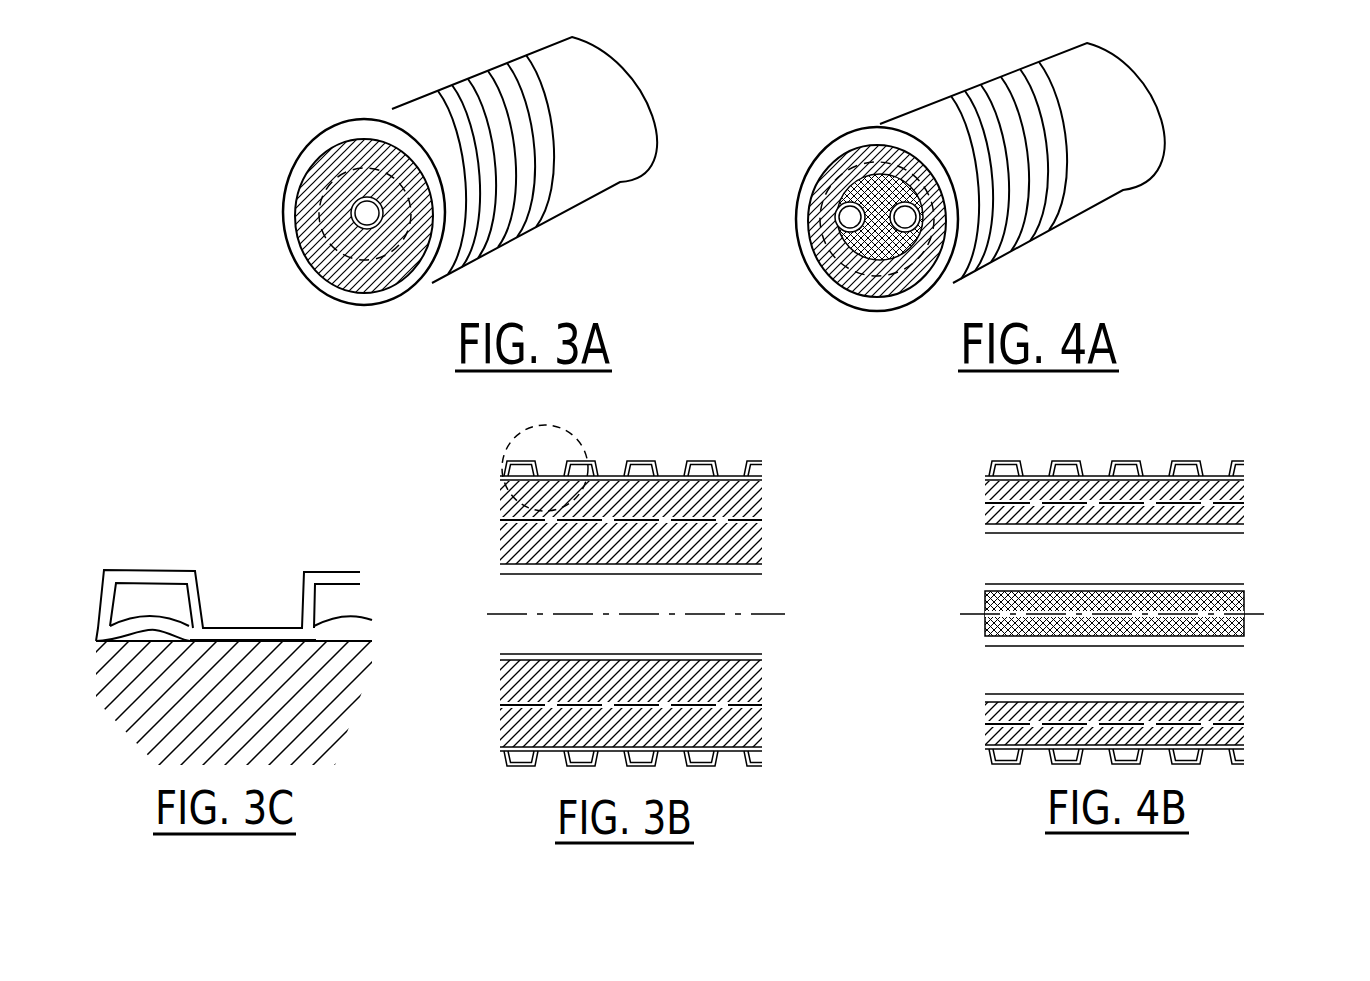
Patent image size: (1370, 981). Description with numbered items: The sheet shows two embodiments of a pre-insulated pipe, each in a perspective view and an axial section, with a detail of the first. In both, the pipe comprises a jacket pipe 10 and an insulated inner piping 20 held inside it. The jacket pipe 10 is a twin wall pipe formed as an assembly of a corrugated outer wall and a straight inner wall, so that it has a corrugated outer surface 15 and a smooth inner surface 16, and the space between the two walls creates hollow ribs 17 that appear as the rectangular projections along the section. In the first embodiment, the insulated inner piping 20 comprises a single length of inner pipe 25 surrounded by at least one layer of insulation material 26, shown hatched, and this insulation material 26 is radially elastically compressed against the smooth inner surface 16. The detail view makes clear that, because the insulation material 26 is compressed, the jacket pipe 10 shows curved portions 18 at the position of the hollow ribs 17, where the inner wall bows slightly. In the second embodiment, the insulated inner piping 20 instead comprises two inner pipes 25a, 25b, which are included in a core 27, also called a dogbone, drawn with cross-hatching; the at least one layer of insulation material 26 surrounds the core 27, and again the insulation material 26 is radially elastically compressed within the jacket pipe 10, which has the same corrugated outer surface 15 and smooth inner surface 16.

In FIG. 3A, the jacket pipe 10 is at (327, 143).
In FIG. 4A, the jacket pipe 10 is at (823, 142).
In FIG. 3C, the jacket pipe 10 is at (245, 553).
In FIG. 3B, the jacket pipe 10 is at (632, 588).
In FIG. 4B, the jacket pipe 10 is at (1125, 589).
In FIG. 3C, the corrugated outer surface 15 is at (157, 570).
In FIG. 3B, the corrugated outer surface 15 is at (678, 476).
In FIG. 4B, the corrugated outer surface 15 is at (1197, 462).
In FIG. 3C, the smooth inner surface 16 is at (104, 638).
In FIG. 3B, the smooth inner surface 16 is at (740, 478).
In FIG. 4B, the smooth inner surface 16 is at (1169, 482).
In FIG. 3C, the hollow ribs 17 is at (159, 608).
In FIG. 3B, the hollow ribs 17 is at (541, 455).
In FIG. 3C, the curved portions 18 is at (342, 641).
In FIG. 3A, the insulated inner piping 20 is at (316, 156).
In FIG. 4A, the insulated inner piping 20 is at (907, 235).
In FIG. 3A, the inner pipe 25 is at (353, 217).
In FIG. 3B, the inner pipe 25 is at (762, 572).
In FIG. 4A, the first inner pipe 25a is at (837, 228).
In FIG. 4B, the first inner pipe 25a is at (985, 529).
In FIG. 4A, the second inner pipe 25b is at (920, 217).
In FIG. 4B, the second inner pipe 25b is at (985, 700).
In FIG. 3A, the insulation material 26 is at (374, 152).
In FIG. 3C, the insulation material 26 is at (149, 701).
In FIG. 3B, the insulation material 26 is at (762, 509).
In FIG. 4B, the insulation material 26 is at (1244, 494).
In FIG. 4A, the core 27 is at (876, 258).
In FIG. 4B, the core 27 is at (1240, 610).